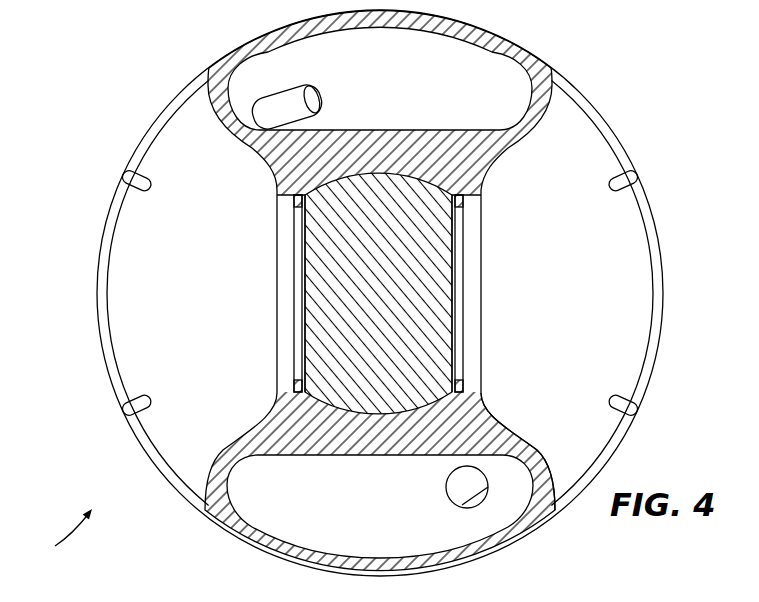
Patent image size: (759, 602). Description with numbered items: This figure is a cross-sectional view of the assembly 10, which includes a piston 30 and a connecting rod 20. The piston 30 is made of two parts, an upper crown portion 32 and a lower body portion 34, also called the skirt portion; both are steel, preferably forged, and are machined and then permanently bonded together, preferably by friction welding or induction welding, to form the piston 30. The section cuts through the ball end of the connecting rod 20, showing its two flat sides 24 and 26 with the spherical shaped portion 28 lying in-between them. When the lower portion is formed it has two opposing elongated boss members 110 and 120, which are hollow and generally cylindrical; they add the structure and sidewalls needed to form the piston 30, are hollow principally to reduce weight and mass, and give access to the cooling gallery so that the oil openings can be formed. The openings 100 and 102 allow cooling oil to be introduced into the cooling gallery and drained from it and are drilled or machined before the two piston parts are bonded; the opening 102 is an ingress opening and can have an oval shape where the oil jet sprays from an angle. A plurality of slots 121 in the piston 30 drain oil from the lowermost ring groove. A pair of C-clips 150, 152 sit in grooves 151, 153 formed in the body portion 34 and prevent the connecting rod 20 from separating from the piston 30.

The assembly 10 is at (58, 535).
The connecting rod 20 is at (315, 330).
The flat side 24 is at (305, 276).
The flat side 26 is at (449, 259).
The spherical shaped portion 28 is at (430, 178).
The piston 30 is at (197, 458).
The crown portion 32 is at (628, 366).
The body portion 34 is at (532, 515).
The opening 100 is at (451, 479).
The ingress opening 102 is at (313, 90).
The boss member 110 is at (550, 70).
The boss member 120 is at (263, 545).
The slots 121 is at (133, 181).
The C-clip 150 is at (297, 232).
The groove 151 is at (284, 192).
The C-clip 152 is at (457, 242).
The groove 153 is at (460, 193).